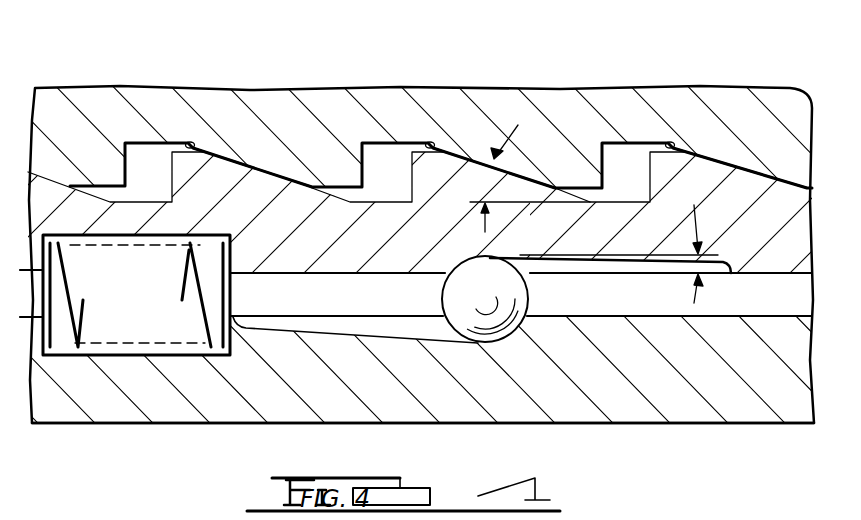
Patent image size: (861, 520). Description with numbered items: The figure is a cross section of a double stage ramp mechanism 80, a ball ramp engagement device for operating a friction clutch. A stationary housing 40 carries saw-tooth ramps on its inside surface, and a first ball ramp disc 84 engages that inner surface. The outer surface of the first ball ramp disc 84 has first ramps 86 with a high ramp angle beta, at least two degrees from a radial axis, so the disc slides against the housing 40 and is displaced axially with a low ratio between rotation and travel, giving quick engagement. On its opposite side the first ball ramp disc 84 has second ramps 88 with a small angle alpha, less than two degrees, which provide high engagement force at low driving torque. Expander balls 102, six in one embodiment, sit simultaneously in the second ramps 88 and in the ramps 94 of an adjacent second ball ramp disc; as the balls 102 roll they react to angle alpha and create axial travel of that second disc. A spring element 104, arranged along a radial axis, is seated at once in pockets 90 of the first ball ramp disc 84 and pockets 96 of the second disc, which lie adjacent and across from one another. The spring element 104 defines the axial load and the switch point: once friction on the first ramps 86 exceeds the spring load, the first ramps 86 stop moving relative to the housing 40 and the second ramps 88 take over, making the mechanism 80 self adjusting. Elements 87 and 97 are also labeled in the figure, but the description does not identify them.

The housing 40 is at (663, 90).
The double stage ramp mechanism 80 is at (346, 78).
The first ball ramp disc 84 is at (388, 252).
The first ramps 86 is at (97, 187).
The tooth tips 87 is at (184, 142).
The second ramps 88 is at (623, 262).
The pockets 90 is at (152, 236).
The ramps 94 is at (334, 326).
The pockets 96 is at (118, 352).
The lower body portion 97 is at (685, 410).
The expander balls 102 is at (491, 320).
The spring element 104 is at (207, 352).